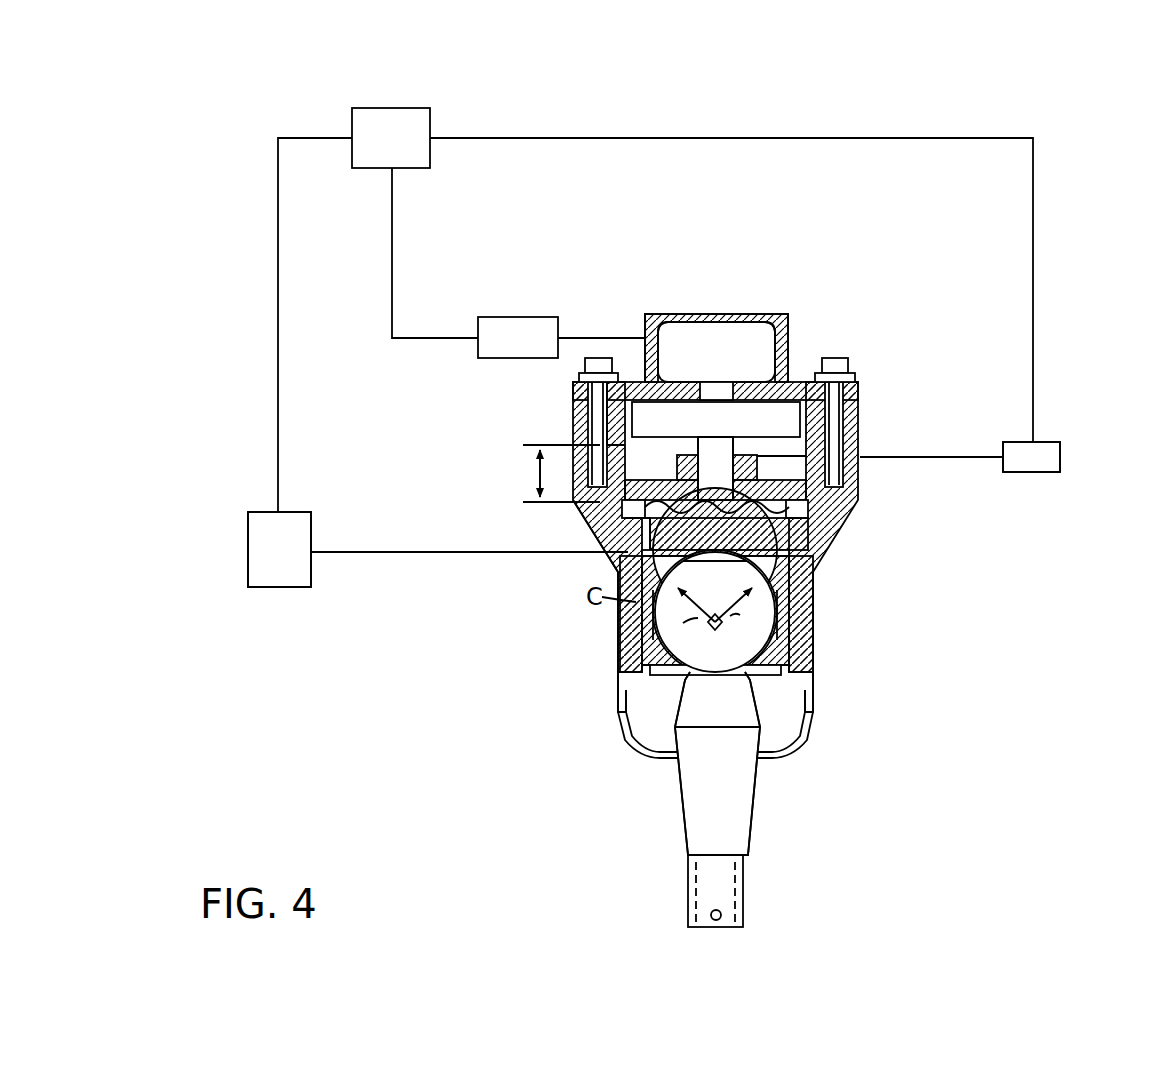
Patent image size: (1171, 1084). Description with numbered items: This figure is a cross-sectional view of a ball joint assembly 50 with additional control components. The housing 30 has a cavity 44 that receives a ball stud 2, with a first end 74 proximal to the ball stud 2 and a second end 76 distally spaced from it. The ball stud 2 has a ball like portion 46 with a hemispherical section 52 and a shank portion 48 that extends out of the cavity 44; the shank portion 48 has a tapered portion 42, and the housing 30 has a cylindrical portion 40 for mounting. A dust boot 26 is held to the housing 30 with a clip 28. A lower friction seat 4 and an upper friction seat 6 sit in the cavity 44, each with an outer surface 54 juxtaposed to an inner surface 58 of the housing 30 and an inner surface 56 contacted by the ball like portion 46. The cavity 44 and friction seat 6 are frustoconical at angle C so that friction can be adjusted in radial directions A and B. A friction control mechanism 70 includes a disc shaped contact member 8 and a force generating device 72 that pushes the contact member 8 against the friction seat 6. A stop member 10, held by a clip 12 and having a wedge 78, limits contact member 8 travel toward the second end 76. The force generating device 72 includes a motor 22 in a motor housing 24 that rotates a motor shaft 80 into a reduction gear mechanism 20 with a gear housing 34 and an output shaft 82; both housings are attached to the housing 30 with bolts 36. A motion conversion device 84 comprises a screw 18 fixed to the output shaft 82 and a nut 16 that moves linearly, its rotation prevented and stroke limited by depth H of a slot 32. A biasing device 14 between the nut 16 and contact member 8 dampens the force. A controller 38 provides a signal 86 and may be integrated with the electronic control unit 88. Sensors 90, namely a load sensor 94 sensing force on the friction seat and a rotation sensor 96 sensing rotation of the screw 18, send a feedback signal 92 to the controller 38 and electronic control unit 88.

The ball stud 2 is at (730, 710).
The lower friction seat 4 is at (792, 672).
The upper friction seat 6 is at (795, 580).
The contact member 8 is at (805, 556).
The stop member 10 is at (828, 536).
The clip 12 is at (797, 508).
The biasing device 14 is at (792, 484).
The nut 16 is at (802, 468).
The screw 18 is at (745, 447).
The reduction gear mechanism 20 is at (795, 408).
The motor 22 is at (762, 348).
The motor housing 24 is at (800, 316).
The dust boot 26 is at (618, 735).
The clip 28 is at (618, 688).
The housing 30 is at (598, 570).
The slot 32 is at (614, 490).
The gear housing 34 is at (568, 403).
The bolts 36 is at (575, 370).
The controller 38 is at (478, 338).
The cylindrical portion 40 is at (612, 633).
The tapered portion 42 is at (684, 821).
The cavity 44 is at (792, 604).
The ball like portion 46 is at (788, 664).
The shank portion 48 is at (740, 823).
The ball joint assembly 50 is at (493, 288).
The hemispherical section 52 is at (730, 596).
The outer surface 54 is at (645, 650).
The inner surface 56 is at (652, 652).
The inner surface 58 is at (778, 626).
The friction control mechanism 70 is at (935, 412).
The force generating device 72 is at (840, 240).
The first end 74 is at (878, 742).
The second end 76 is at (905, 338).
The wedge 78 is at (640, 541).
The motor shaft 80 is at (722, 392).
The output shaft 82 is at (700, 455).
The motion conversion device 84 is at (940, 472).
The signal 86 is at (583, 338).
The electronic control unit 88 is at (430, 110).
The sensor 90 is at (248, 535).
The feedback signal 92 is at (310, 138).
The load sensor 94 is at (275, 587).
The rotation sensor 96 is at (1060, 457).